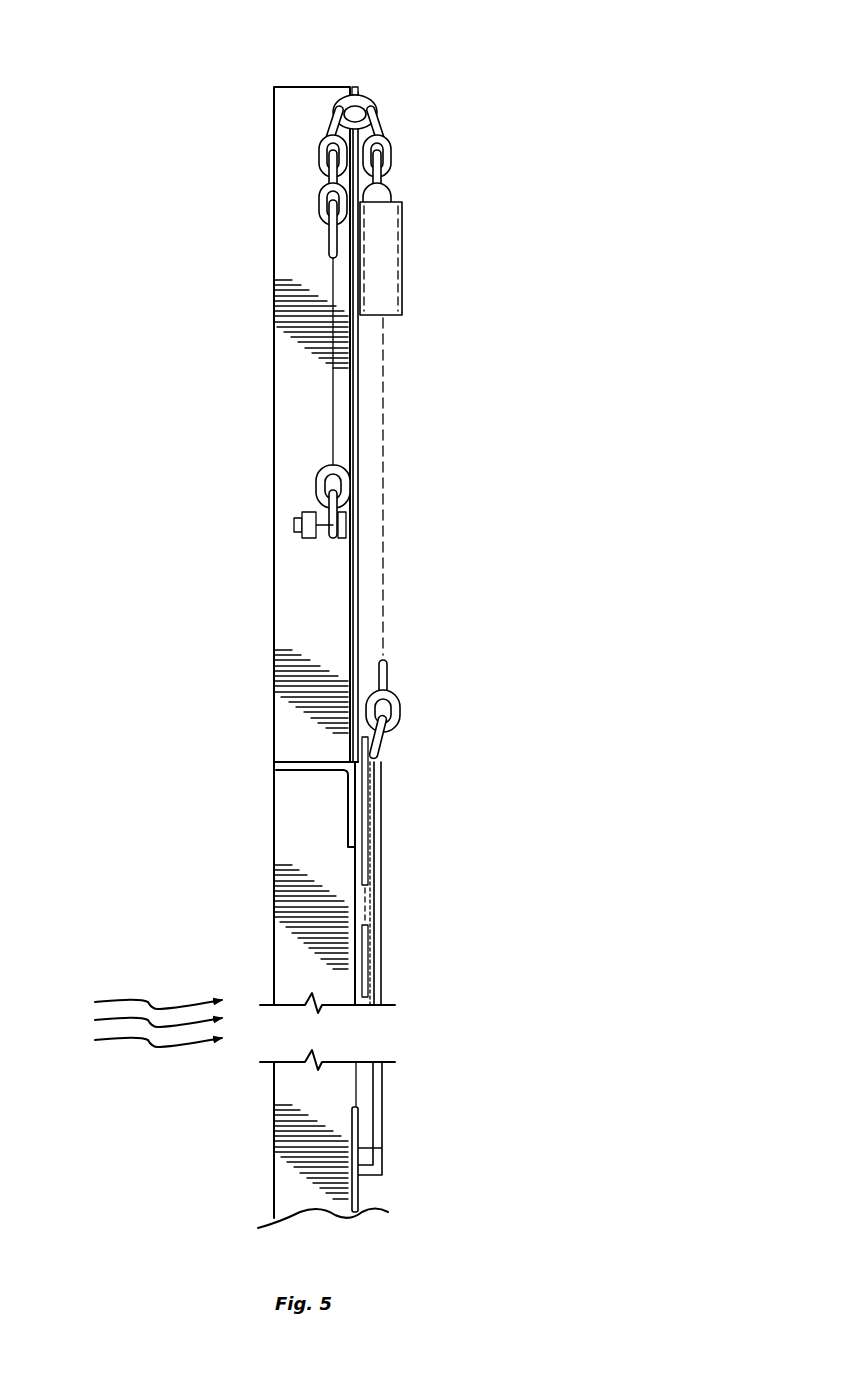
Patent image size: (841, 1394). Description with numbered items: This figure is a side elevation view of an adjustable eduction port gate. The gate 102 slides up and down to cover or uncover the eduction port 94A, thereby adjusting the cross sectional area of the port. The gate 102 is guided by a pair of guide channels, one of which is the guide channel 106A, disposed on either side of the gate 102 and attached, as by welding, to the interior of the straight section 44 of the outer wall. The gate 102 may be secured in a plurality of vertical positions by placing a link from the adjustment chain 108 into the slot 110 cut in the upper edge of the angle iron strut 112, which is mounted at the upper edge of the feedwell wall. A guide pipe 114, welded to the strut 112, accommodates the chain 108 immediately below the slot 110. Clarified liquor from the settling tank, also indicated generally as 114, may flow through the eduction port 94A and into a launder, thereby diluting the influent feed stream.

The straight section 44 is at (360, 1195).
The eduction port 94A is at (362, 982).
The gate 102 is at (366, 805).
The guide channel 106A is at (383, 882).
The adjustment chain 108 is at (395, 153).
The slot 110 is at (353, 88).
The angle iron strut 112 is at (358, 428).
The guide pipe 114 is at (404, 282).